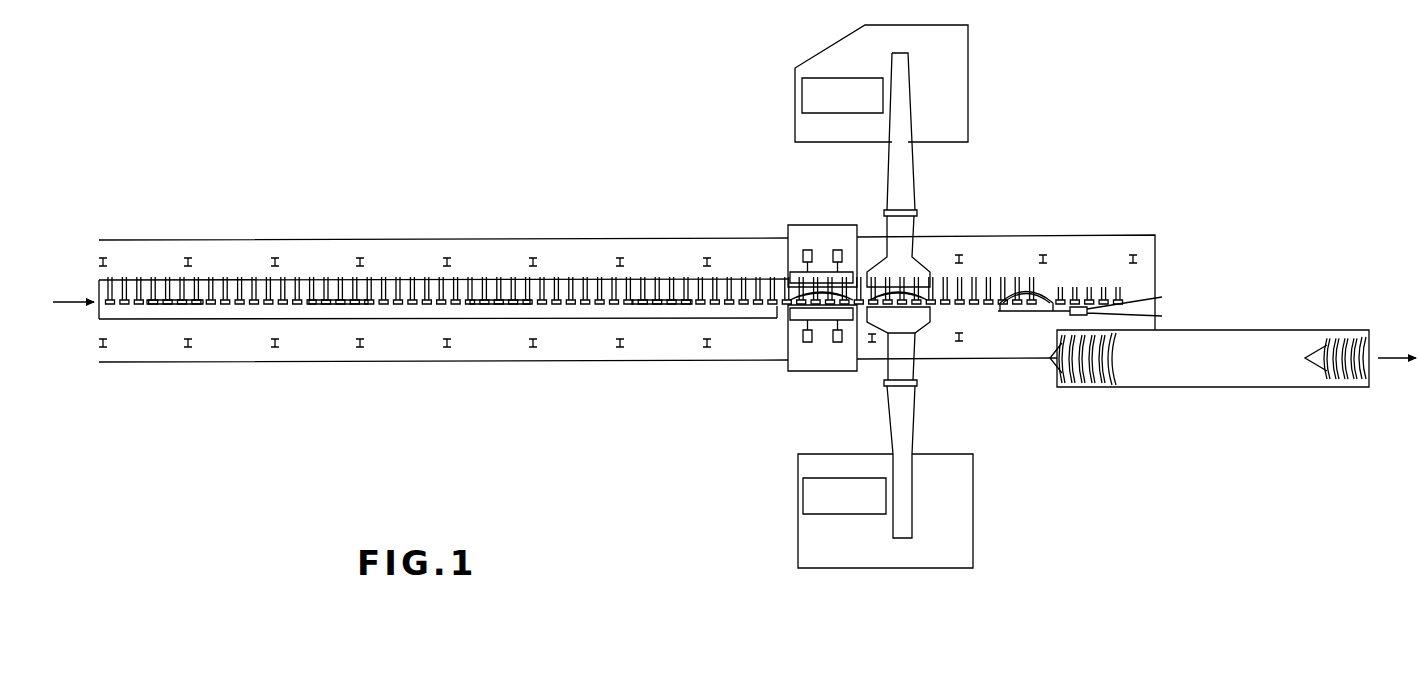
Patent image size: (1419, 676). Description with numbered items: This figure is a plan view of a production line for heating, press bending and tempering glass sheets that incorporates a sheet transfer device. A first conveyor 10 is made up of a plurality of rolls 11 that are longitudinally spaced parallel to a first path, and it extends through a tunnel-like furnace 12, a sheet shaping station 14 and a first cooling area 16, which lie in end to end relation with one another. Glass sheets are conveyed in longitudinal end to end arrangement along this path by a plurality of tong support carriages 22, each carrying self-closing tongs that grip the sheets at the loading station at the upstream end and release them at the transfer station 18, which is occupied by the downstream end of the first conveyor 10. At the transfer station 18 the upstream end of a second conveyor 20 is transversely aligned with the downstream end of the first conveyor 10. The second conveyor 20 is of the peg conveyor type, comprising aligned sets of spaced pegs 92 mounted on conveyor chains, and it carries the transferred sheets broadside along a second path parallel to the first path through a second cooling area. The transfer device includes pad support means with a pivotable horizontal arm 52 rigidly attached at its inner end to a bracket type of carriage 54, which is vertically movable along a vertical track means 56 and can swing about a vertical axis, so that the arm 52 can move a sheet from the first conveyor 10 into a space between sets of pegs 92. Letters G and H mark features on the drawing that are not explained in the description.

The first conveyor 10 is at (138, 261).
The rolls 11 is at (110, 304).
The tunnel-like furnace 12 is at (397, 326).
The sheet shaping station 14 is at (815, 216).
The first cooling area 16 is at (923, 257).
The transfer station 18 is at (1084, 227).
The second conveyor 20 is at (1220, 394).
The tong support carriages 22 is at (203, 304).
The pivotable horizontal arm 52 is at (1040, 398).
The bracket type of carriage 54 is at (1132, 317).
The vertical track means 56 is at (1141, 298).
The pegs 92 is at (1050, 358).
The gap G is at (1346, 332).
The height H is at (1131, 287).